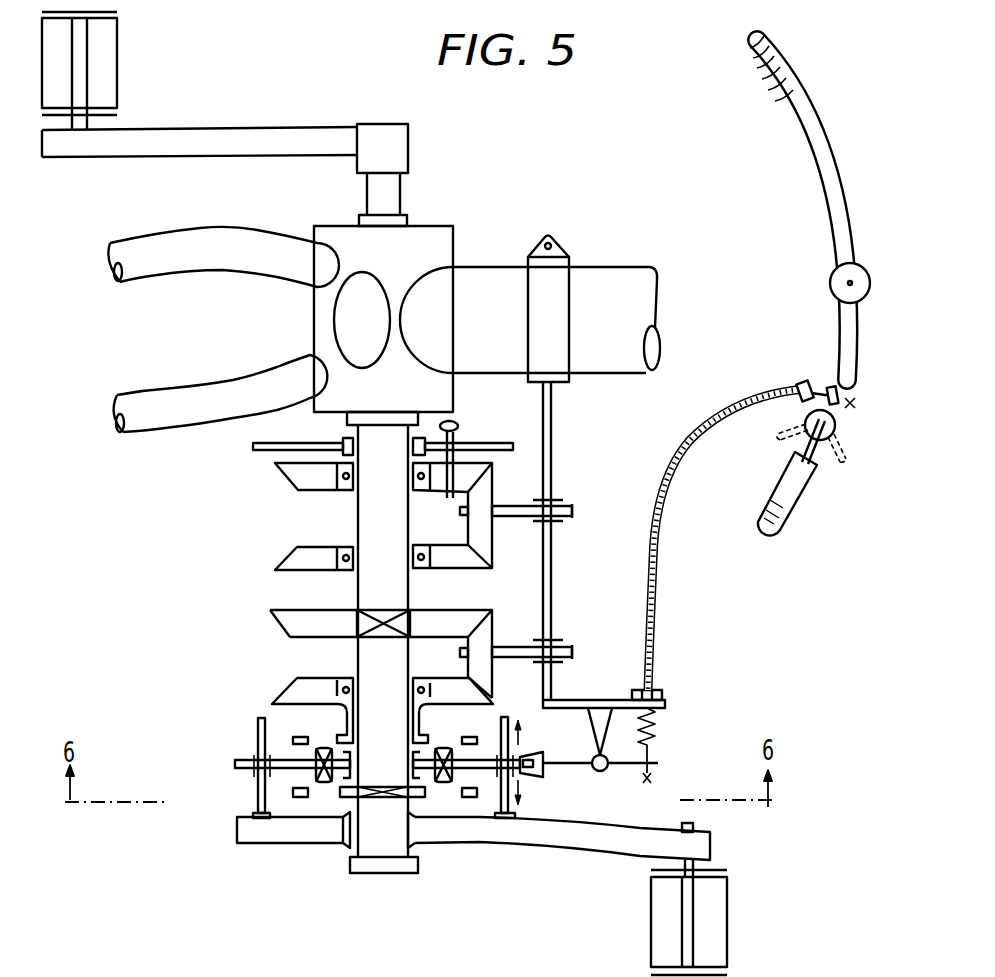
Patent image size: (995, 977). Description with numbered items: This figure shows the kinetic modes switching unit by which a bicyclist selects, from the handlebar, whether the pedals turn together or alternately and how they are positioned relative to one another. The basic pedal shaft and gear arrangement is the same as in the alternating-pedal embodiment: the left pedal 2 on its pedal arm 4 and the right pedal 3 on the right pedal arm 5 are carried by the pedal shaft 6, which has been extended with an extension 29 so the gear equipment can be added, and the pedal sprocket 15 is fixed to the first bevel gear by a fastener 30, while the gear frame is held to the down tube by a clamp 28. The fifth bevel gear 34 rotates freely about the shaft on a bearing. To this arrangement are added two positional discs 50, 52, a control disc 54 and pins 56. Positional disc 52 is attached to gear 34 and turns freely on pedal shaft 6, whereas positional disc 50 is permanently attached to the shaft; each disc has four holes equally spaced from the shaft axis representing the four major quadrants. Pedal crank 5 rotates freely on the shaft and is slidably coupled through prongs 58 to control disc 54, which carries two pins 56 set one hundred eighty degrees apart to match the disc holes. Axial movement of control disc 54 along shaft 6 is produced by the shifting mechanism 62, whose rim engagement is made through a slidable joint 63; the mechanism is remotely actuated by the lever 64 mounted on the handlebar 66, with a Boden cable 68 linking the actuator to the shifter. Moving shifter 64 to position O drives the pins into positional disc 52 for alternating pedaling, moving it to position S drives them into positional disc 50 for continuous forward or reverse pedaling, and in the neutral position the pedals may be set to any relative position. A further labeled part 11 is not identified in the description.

The left pedal 2 is at (118, 45).
The right pedal 3 is at (727, 898).
The pedal arm 4 is at (267, 127).
The right pedal arm 5 is at (577, 848).
The pedal shaft 6 is at (402, 197).
The clamp block 11 is at (345, 455).
The pedal sprocket 15 is at (257, 453).
The clamp 28 is at (567, 245).
The pedal shaft extension 29 is at (358, 515).
The fastener 30 is at (458, 423).
The fifth bevel gear 34 is at (283, 688).
The positional disc 50 is at (295, 798).
The positional disc 52 is at (293, 738).
The control disc 54 is at (235, 768).
The pins 56 is at (323, 784).
The prongs 58 is at (255, 787).
The shifting mechanism 62 is at (665, 730).
The slidable joint 63 is at (547, 775).
The lever 64 is at (843, 447).
The handlebar 66 is at (823, 123).
The Boden cable 68 is at (662, 552).